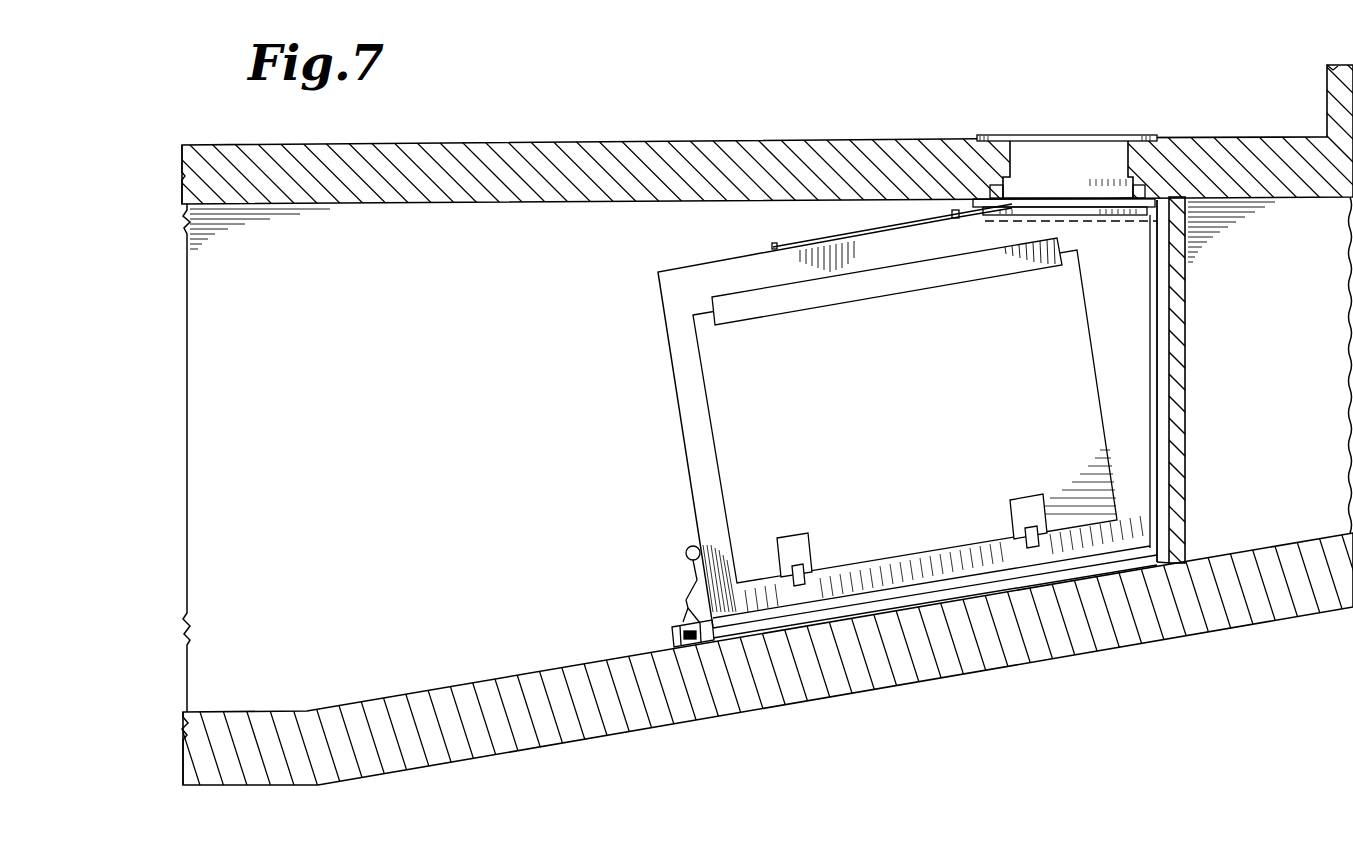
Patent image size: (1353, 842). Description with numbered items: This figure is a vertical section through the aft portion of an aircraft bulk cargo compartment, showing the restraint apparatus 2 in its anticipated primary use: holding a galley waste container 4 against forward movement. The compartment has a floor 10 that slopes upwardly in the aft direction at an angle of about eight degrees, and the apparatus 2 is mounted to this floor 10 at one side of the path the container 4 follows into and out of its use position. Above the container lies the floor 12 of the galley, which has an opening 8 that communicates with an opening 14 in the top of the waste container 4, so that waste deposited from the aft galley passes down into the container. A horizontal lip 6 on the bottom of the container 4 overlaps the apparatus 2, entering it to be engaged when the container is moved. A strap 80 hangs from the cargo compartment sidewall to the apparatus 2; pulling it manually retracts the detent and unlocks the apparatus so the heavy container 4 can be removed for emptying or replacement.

The floor of the galley 12 is at (652, 157).
The opening 8 is at (1068, 136).
The opening in the waste container 14 is at (1082, 213).
The galley waste container 4 is at (860, 398).
The horizontal lip 6 is at (1175, 565).
The strap 80 is at (690, 572).
The restraint apparatus 2 is at (652, 639).
The floor 10 is at (918, 652).